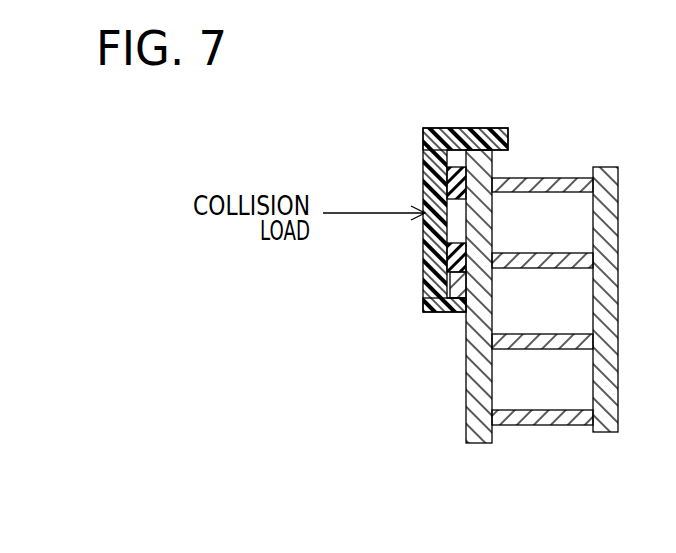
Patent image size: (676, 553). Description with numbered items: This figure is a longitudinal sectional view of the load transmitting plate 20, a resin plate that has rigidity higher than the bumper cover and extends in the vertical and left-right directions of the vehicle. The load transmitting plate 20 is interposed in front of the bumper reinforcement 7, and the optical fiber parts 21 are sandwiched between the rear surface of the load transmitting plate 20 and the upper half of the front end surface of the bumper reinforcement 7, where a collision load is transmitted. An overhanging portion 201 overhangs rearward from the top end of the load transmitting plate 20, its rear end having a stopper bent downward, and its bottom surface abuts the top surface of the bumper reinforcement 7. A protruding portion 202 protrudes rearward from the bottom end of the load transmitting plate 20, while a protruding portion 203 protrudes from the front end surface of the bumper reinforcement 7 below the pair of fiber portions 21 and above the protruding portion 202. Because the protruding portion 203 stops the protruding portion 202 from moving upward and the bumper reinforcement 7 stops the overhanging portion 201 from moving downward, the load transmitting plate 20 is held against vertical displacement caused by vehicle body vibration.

The bumper reinforcement 7 is at (558, 167).
The load transmitting plate 20 is at (424, 148).
The overhanging portion 201 is at (457, 128).
The optical fiber part 21 is at (508, 130).
The protruding portion 202 is at (438, 313).
The protruding portion 203 is at (456, 313).